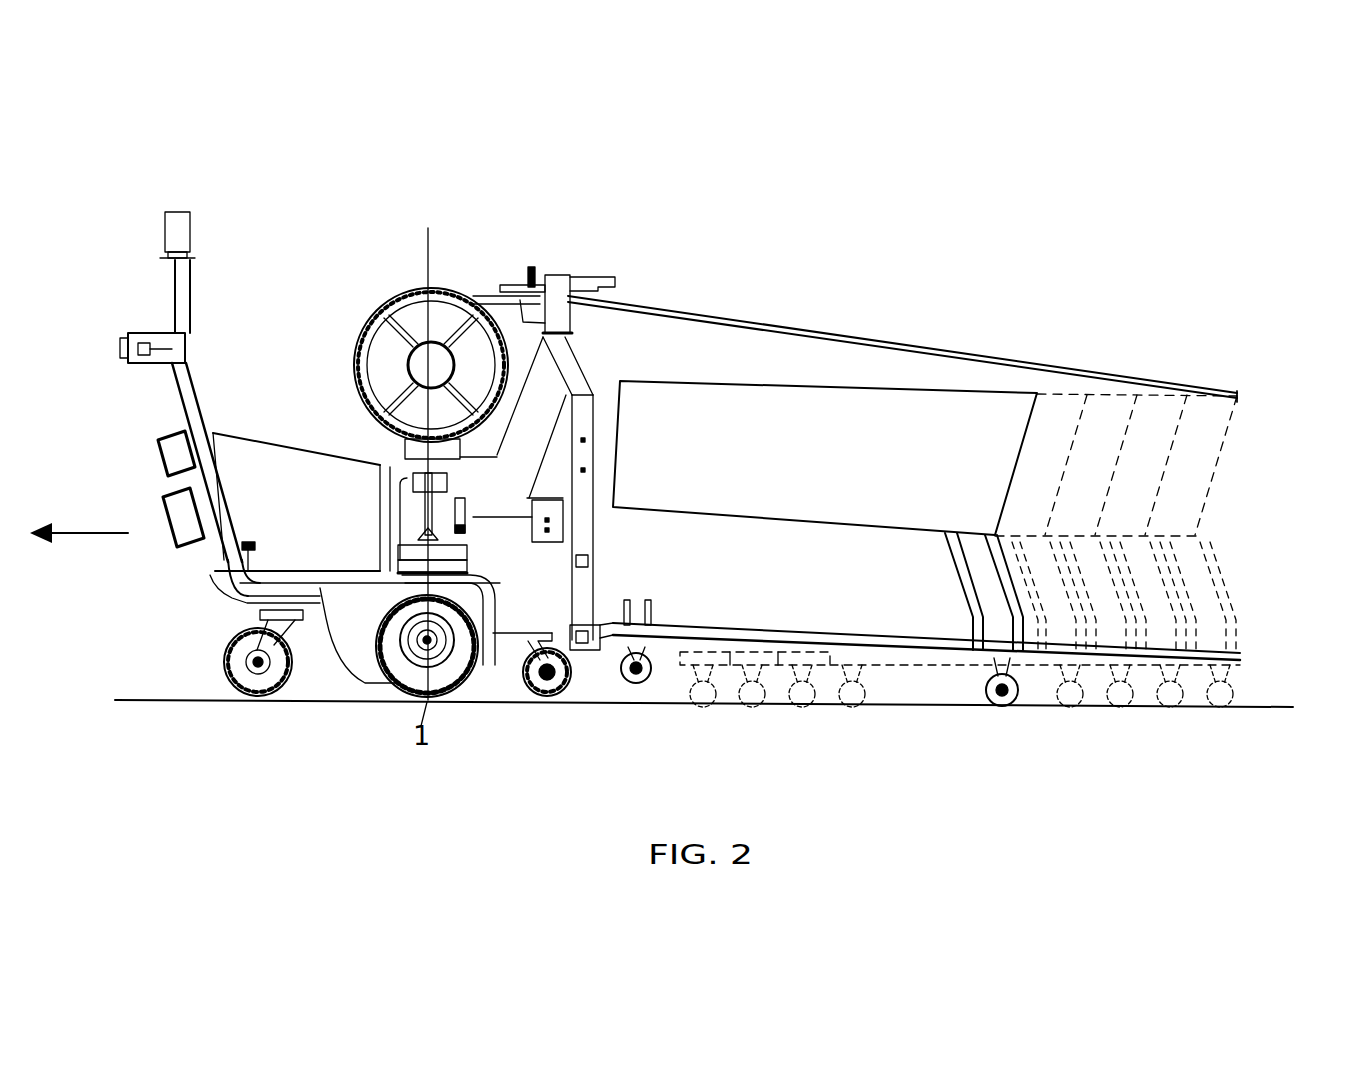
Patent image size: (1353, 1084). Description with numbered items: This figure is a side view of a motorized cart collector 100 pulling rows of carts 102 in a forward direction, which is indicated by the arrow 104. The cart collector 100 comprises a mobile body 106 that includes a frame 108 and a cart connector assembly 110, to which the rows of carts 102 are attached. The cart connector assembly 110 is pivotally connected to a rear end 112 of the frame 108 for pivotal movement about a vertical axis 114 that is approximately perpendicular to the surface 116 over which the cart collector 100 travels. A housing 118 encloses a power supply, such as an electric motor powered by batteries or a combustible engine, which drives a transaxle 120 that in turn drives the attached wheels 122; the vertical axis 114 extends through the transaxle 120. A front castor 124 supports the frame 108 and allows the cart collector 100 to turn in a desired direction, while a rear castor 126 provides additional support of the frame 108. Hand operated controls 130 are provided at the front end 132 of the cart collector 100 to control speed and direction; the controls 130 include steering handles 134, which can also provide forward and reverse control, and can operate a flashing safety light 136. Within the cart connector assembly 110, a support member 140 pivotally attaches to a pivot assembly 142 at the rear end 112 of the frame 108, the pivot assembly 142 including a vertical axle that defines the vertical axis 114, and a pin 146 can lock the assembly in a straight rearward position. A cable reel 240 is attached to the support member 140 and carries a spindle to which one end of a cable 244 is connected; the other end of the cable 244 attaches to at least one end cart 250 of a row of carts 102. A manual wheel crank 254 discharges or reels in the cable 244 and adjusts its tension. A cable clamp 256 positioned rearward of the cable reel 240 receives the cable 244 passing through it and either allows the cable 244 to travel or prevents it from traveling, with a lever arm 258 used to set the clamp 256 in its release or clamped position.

The cart collector 100 is at (119, 240).
The carts 102 is at (900, 403).
The arrow 104 is at (85, 533).
The mobile body 106 is at (215, 600).
The frame 108 is at (357, 583).
The cart connector assembly 110 is at (504, 262).
The rear end 112 is at (462, 576).
The vertical axis 114 is at (404, 230).
The surface 116 is at (1272, 706).
The housing 118 is at (263, 442).
The transaxle 120 is at (412, 694).
The wheels 122 is at (455, 702).
The front castor 124 is at (250, 688).
The rear castor 126 is at (565, 702).
The hand operated controls 130 is at (130, 322).
The front end 132 is at (230, 428).
The steering handles 134 is at (142, 360).
The flashing safety light 136 is at (186, 224).
The support member 140 is at (484, 530).
The pivot assembly 142 is at (418, 500).
The pin 146 is at (470, 522).
The cable reel 240 is at (333, 295).
The cable 244 is at (772, 322).
The end cart 250 is at (1232, 425).
The wheel crank 254 is at (362, 334).
The cable clamp 256 is at (580, 246).
The lever arm 258 is at (600, 290).